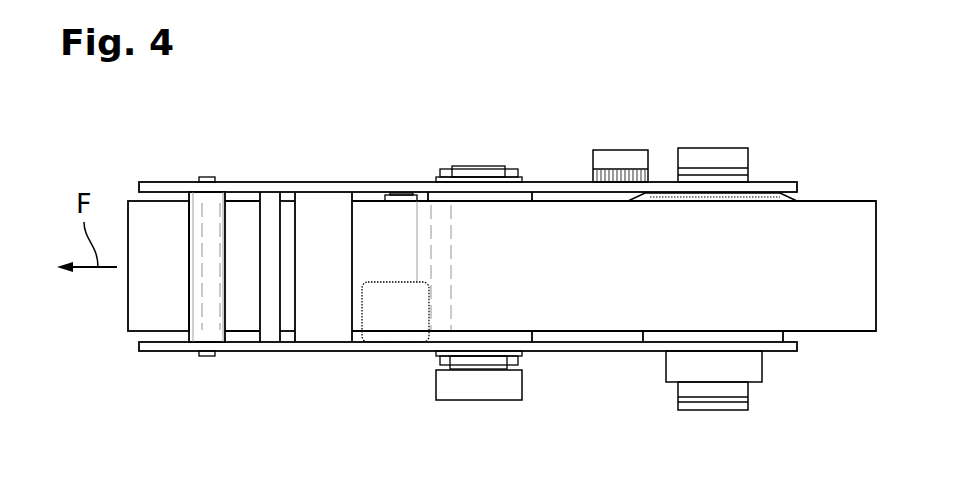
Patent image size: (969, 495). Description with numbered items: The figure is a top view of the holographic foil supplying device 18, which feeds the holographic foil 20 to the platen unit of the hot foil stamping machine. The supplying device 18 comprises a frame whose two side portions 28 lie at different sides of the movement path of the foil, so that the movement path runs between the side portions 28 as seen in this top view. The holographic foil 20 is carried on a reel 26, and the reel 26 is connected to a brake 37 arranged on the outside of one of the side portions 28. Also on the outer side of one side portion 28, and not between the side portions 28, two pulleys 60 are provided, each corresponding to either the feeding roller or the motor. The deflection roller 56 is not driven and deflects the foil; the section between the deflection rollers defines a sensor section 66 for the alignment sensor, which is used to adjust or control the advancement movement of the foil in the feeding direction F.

The holographic foil supplying device 18 is at (257, 146).
The holographic foil 20 is at (542, 225).
The reel 26 is at (816, 200).
The side portions 28 is at (573, 188).
The brake 37 is at (620, 160).
The deflection roller 56 is at (197, 199).
The pulleys 60 is at (494, 392).
The sensor section 66 is at (362, 236).